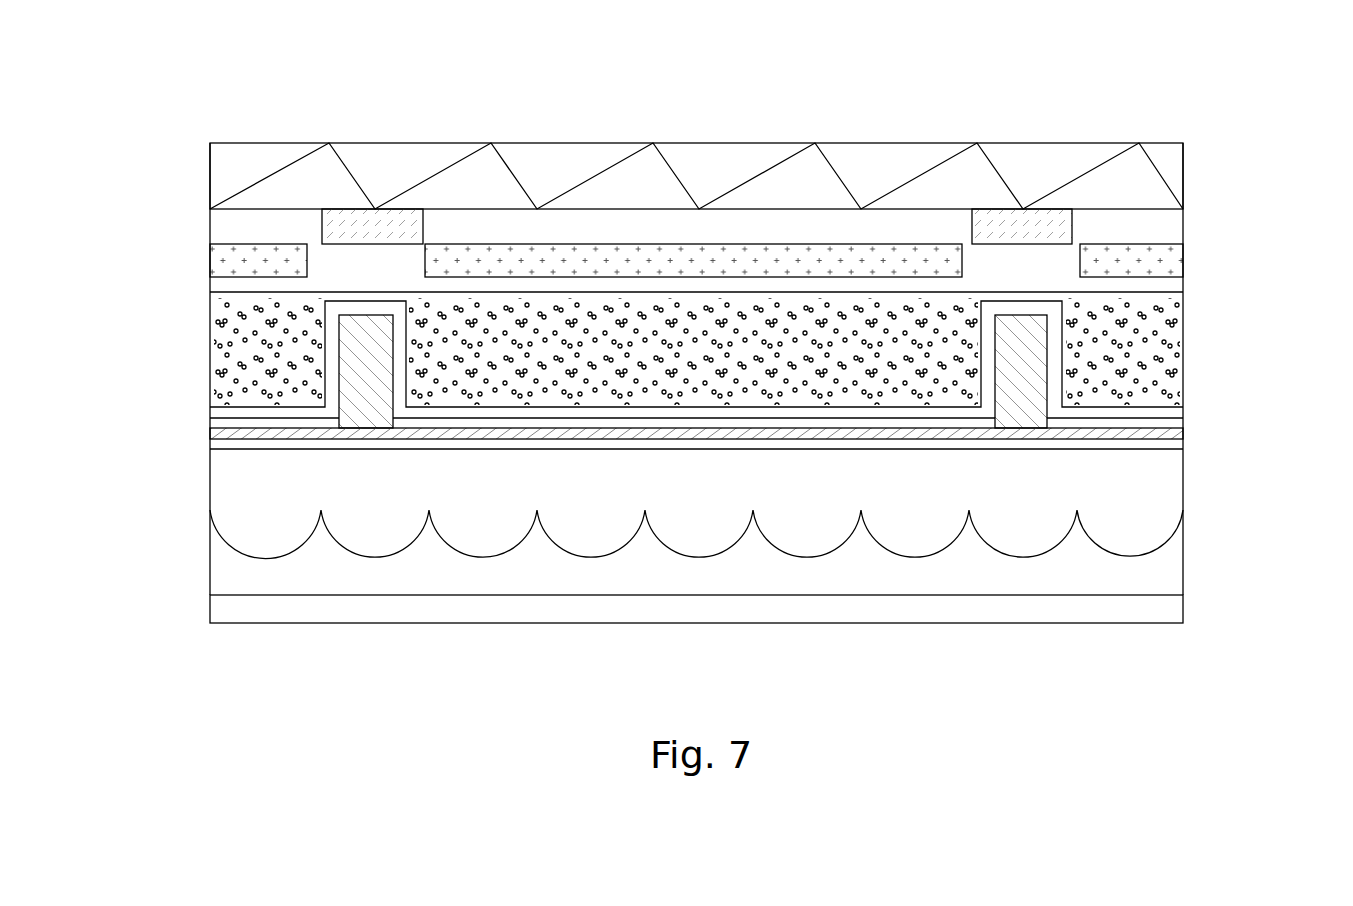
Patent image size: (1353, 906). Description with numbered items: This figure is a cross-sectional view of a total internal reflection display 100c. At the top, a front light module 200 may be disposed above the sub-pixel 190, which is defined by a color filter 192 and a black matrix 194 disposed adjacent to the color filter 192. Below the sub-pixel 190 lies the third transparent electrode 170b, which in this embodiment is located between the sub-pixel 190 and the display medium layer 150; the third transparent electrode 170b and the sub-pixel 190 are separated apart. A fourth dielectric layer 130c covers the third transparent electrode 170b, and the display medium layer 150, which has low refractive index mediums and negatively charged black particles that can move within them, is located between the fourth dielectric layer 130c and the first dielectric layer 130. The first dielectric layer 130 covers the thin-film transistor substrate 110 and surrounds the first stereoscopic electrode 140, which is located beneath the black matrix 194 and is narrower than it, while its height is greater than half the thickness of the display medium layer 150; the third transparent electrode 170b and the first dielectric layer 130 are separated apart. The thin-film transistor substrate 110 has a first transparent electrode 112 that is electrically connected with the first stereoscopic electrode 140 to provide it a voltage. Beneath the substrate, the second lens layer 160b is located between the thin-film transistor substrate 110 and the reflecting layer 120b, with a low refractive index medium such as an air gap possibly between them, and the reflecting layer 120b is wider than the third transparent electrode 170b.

The total internal reflection display 100c is at (200, 75).
The front light module 200 is at (1162, 150).
The sub-pixel 190 is at (1095, 95).
The color filter 192 is at (955, 213).
The black matrix 194 is at (1043, 215).
The third transparent electrode 170b is at (1175, 253).
The fourth dielectric layer 130c is at (1175, 285).
The display medium layer 150 is at (1178, 355).
The first dielectric layer 130 is at (1178, 414).
The first stereoscopic electrode 140 is at (1033, 323).
The first transparent electrode 112 is at (1180, 433).
The thin-film transistor substrate 110 is at (1180, 446).
The second lens layer 160b is at (1175, 485).
The reflecting layer 120b is at (1180, 608).